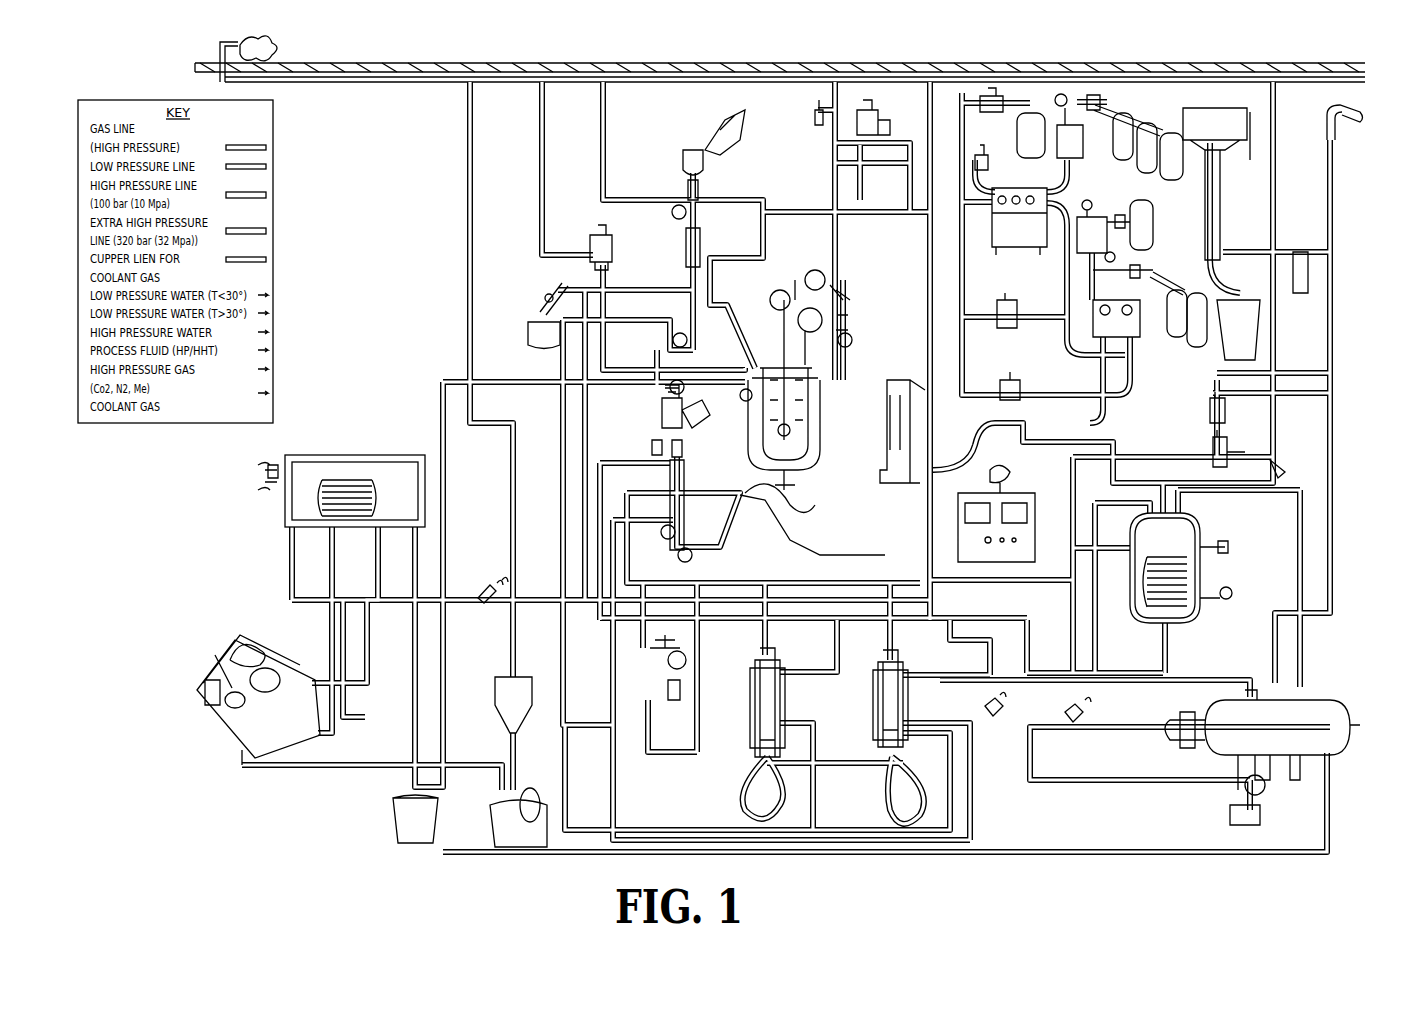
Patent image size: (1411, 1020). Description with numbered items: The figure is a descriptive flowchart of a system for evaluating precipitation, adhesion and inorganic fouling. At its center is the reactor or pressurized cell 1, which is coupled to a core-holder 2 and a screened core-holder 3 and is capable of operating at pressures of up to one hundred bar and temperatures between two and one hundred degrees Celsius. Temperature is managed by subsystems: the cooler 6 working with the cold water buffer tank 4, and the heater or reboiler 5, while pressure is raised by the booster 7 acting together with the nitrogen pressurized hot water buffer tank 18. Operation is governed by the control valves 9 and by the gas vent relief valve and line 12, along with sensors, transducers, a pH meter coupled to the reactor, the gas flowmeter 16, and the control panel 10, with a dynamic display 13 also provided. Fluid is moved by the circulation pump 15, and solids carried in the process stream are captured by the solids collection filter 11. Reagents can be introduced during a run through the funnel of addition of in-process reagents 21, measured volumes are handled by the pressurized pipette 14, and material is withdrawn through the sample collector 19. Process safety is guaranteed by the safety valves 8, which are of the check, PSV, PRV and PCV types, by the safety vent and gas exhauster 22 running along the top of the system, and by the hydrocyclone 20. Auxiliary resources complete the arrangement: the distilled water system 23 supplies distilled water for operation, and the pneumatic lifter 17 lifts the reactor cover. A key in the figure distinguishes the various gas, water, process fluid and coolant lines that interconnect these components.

The reactor or pressurized cell 1 is at (832, 426).
The core-holder 2 is at (865, 711).
The screened core-holder 3 is at (744, 699).
The cold water buffer tank 4 is at (367, 444).
The heater (reboiler) 5 is at (1338, 697).
The cooler 6 is at (205, 736).
The booster (pressure increase) 7 is at (992, 269).
The safety valves 8 is at (962, 139).
The control valves 9 is at (485, 608).
The control panel 10 is at (951, 538).
The solids collection filter 11 is at (777, 507).
The gas vent relief valve and line 12 is at (853, 280).
The dynamic display 13 is at (661, 669).
The pressurized pipette 14 is at (685, 245).
The circulation pump 15 is at (657, 413).
The gas flowmeter 16 is at (871, 92).
The pneumatic lifter 17 is at (891, 489).
The nitrogen pressurized hot water buffer tank 18 is at (1213, 532).
The sample collector 19 is at (534, 297).
The hydrocyclone 20 is at (494, 689).
The funnel of addition of in-process reagents 21 is at (689, 137).
The safety vent/gas exhauster 22 is at (310, 42).
The distilled water system 23 is at (1246, 219).